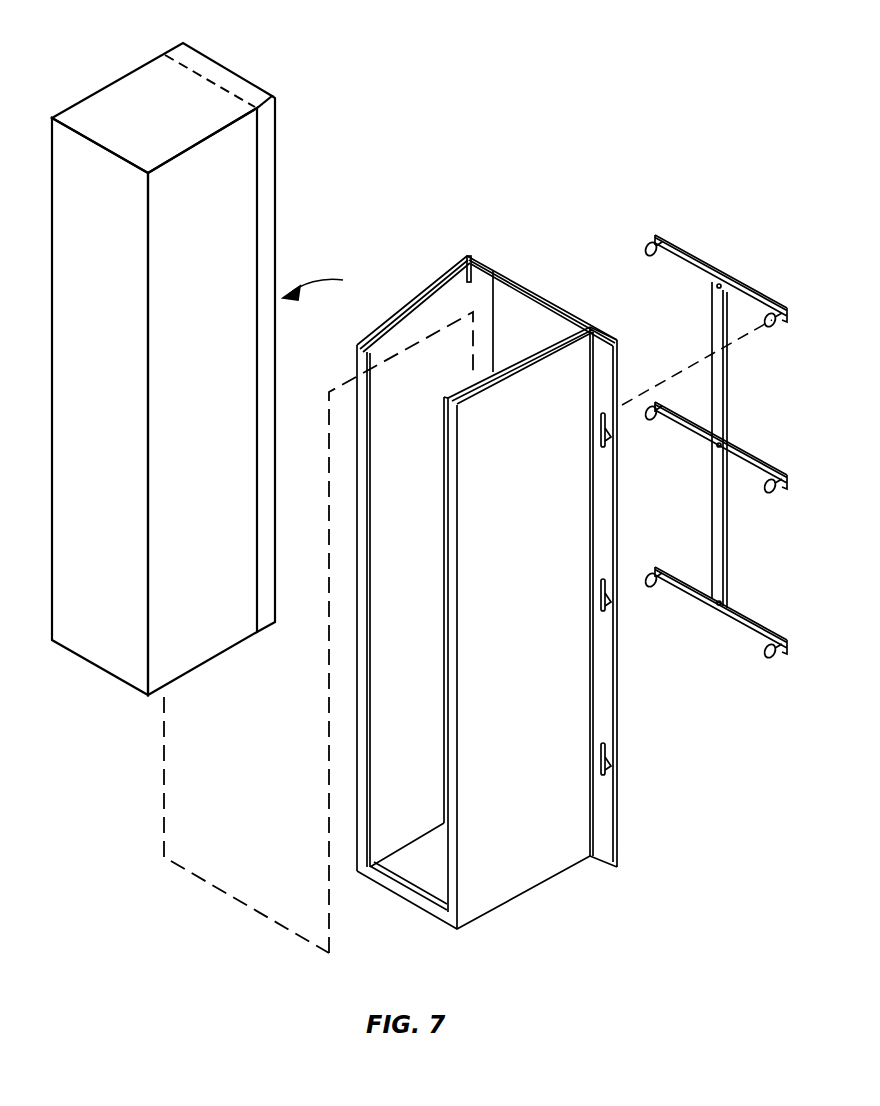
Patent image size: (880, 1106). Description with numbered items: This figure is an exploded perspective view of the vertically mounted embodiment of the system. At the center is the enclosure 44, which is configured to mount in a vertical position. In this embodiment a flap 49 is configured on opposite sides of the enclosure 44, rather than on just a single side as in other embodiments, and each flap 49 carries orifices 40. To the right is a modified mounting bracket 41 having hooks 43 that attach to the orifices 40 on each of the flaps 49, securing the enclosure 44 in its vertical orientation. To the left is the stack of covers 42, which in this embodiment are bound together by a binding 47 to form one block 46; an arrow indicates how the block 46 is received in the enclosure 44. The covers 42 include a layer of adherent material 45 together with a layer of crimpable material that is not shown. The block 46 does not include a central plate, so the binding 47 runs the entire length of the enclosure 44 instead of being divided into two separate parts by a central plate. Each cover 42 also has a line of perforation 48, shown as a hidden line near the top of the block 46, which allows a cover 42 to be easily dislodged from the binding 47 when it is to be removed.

The orifices 40 is at (607, 440).
The mounting bracket 41 is at (690, 263).
The covers 42 is at (196, 356).
The hooks 43 is at (774, 323).
The enclosure 44 is at (362, 367).
The layer of adherent material 45 is at (138, 97).
The block 46 is at (327, 285).
The binding 47 is at (272, 162).
The line of perforation 48 is at (213, 79).
The flap 49 is at (473, 268).